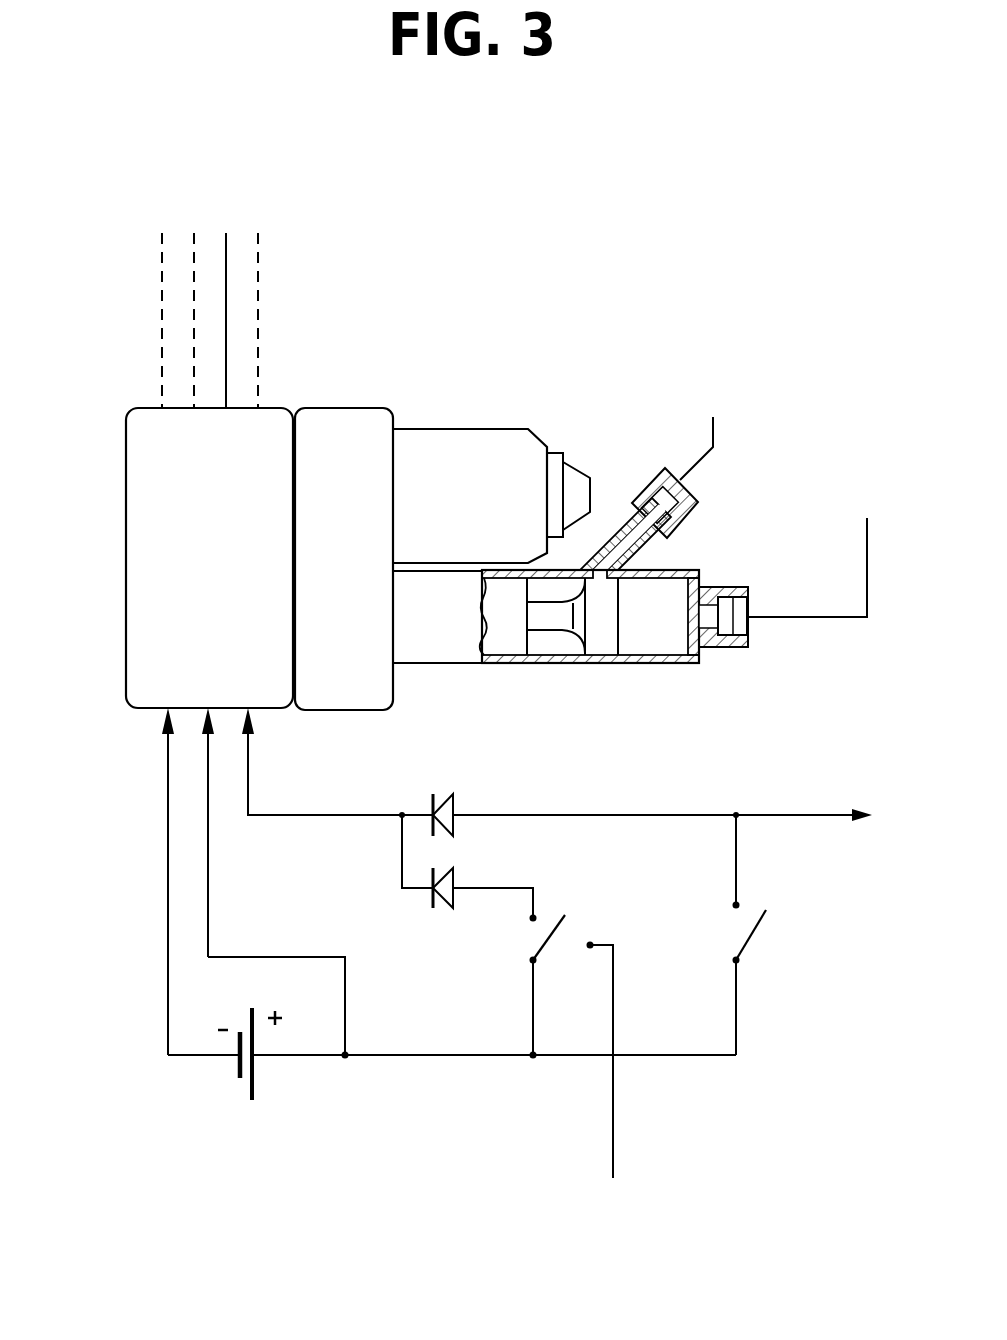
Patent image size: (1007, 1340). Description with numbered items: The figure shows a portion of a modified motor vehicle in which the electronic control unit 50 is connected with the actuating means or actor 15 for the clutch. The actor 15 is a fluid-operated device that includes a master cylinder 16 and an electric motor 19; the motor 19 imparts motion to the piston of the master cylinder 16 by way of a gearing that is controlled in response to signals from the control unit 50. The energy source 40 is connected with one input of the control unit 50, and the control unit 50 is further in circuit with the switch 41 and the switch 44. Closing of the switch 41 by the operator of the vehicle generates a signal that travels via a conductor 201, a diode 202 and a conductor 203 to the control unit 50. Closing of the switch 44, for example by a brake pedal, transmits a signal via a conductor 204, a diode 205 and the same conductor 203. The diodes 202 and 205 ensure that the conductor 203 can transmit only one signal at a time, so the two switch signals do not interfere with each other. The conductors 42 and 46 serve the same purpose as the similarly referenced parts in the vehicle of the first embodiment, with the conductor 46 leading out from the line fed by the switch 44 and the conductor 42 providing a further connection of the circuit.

The electronic control unit 50 is at (152, 456).
The actuating means (actor) 15 is at (333, 428).
The electric motor 19 is at (450, 440).
The master cylinder 16 is at (634, 675).
The conductor 203 is at (325, 813).
The diode 205 is at (445, 810).
The conductor 204 is at (578, 813).
The conductor 46 is at (778, 814).
The conductor 201 is at (487, 888).
The diode 202 is at (440, 905).
The switch 41 is at (532, 936).
The switch 44 is at (725, 934).
The energy source 40 is at (231, 1098).
The conductor 42 is at (613, 1100).